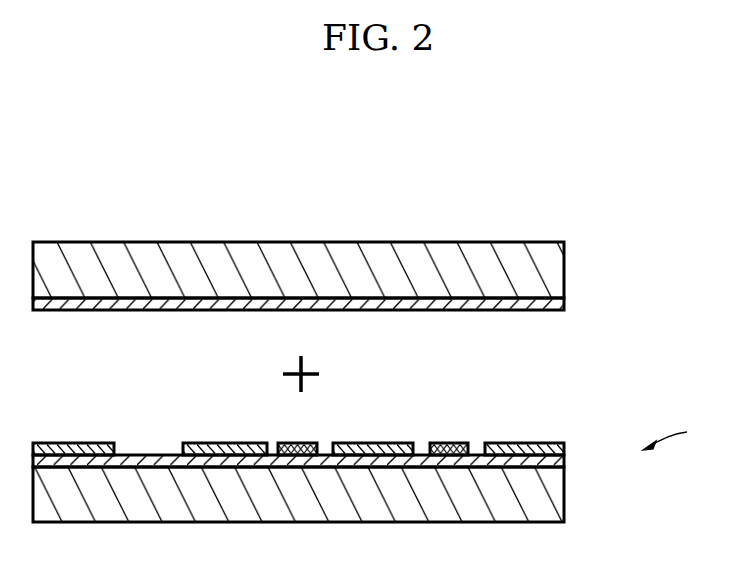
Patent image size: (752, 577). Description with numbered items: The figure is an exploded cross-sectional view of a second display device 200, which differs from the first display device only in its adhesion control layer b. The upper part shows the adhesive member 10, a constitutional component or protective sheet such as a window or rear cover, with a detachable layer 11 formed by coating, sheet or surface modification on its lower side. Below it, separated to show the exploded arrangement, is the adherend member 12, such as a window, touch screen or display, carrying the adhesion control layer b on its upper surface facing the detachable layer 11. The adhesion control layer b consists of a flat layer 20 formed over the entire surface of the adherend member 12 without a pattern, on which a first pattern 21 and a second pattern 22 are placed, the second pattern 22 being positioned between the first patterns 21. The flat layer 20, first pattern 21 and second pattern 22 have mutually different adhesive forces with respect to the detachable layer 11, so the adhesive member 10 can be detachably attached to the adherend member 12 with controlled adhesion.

The second display device 200 is at (524, 177).
The adhesive member 10 is at (565, 257).
The detachable layer 11 is at (565, 303).
The adherend member 12 is at (565, 505).
The flat layer 20 is at (565, 459).
The first pattern 21 is at (564, 443).
The second pattern 22 is at (452, 443).
The adhesion control layer b is at (676, 435).